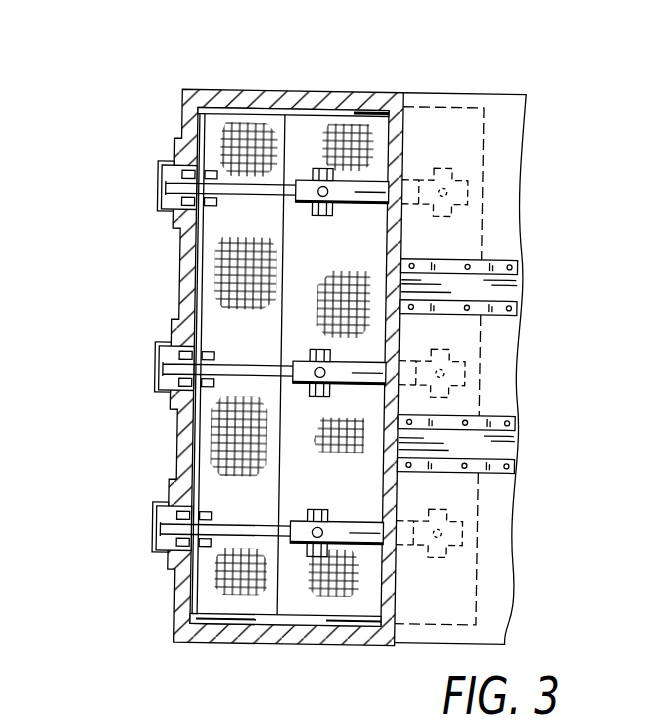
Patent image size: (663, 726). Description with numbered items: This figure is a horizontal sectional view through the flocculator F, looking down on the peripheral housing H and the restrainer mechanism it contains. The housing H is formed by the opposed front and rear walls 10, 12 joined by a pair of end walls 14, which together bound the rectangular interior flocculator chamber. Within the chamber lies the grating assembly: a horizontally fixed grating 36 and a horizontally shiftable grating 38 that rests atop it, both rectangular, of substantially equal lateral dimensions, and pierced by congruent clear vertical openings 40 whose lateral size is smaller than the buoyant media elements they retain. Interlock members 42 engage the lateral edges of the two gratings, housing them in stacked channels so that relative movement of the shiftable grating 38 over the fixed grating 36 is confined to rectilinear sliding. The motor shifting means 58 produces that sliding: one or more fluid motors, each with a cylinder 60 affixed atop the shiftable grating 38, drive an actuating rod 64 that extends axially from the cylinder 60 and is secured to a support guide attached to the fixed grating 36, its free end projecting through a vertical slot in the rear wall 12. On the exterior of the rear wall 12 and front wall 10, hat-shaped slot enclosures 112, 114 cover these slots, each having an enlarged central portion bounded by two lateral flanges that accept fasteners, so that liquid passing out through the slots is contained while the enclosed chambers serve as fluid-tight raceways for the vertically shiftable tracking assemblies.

The flocculator F is at (153, 72).
The peripheral housing H is at (438, 90).
The front wall 10 is at (497, 189).
The rear wall 12 is at (181, 447).
The end walls 14 is at (352, 97).
The horizontally fixed grating 36 is at (207, 299).
The horizontally shiftable grating 38 is at (316, 337).
The clear vertical openings 40 is at (243, 263).
The interlock members 42 is at (248, 108).
The motor shifting means 58 is at (366, 213).
The cylinder 60 is at (302, 365).
The actuating rod 64 is at (265, 530).
The slot enclosure 112 is at (153, 190).
The slot enclosure 114 is at (506, 286).